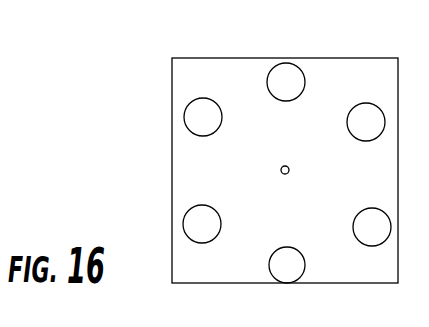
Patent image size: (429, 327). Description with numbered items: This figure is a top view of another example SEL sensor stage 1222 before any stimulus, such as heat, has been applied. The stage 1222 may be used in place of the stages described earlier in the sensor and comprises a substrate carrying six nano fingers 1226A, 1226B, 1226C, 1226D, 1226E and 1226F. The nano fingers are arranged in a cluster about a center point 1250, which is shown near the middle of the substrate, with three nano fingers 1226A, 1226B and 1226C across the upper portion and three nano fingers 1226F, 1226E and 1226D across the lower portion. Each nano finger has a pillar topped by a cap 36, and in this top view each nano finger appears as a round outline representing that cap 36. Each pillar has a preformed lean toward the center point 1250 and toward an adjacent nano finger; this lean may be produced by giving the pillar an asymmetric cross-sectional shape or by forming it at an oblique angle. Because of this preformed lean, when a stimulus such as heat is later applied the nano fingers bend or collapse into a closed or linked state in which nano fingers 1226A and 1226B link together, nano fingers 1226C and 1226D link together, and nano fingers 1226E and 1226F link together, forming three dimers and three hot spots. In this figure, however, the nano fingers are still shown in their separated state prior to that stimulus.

The SEL sensor stage 1222 is at (157, 139).
The nano finger 1226A is at (201, 98).
The nano finger 1226B is at (286, 63).
The nano finger 1226C is at (367, 103).
The nano finger 1226D is at (374, 246).
The nano finger 1226E is at (293, 247).
The nano finger 1226F is at (203, 243).
The center point 1250 is at (281, 170).
The cap 36 is at (184, 227).